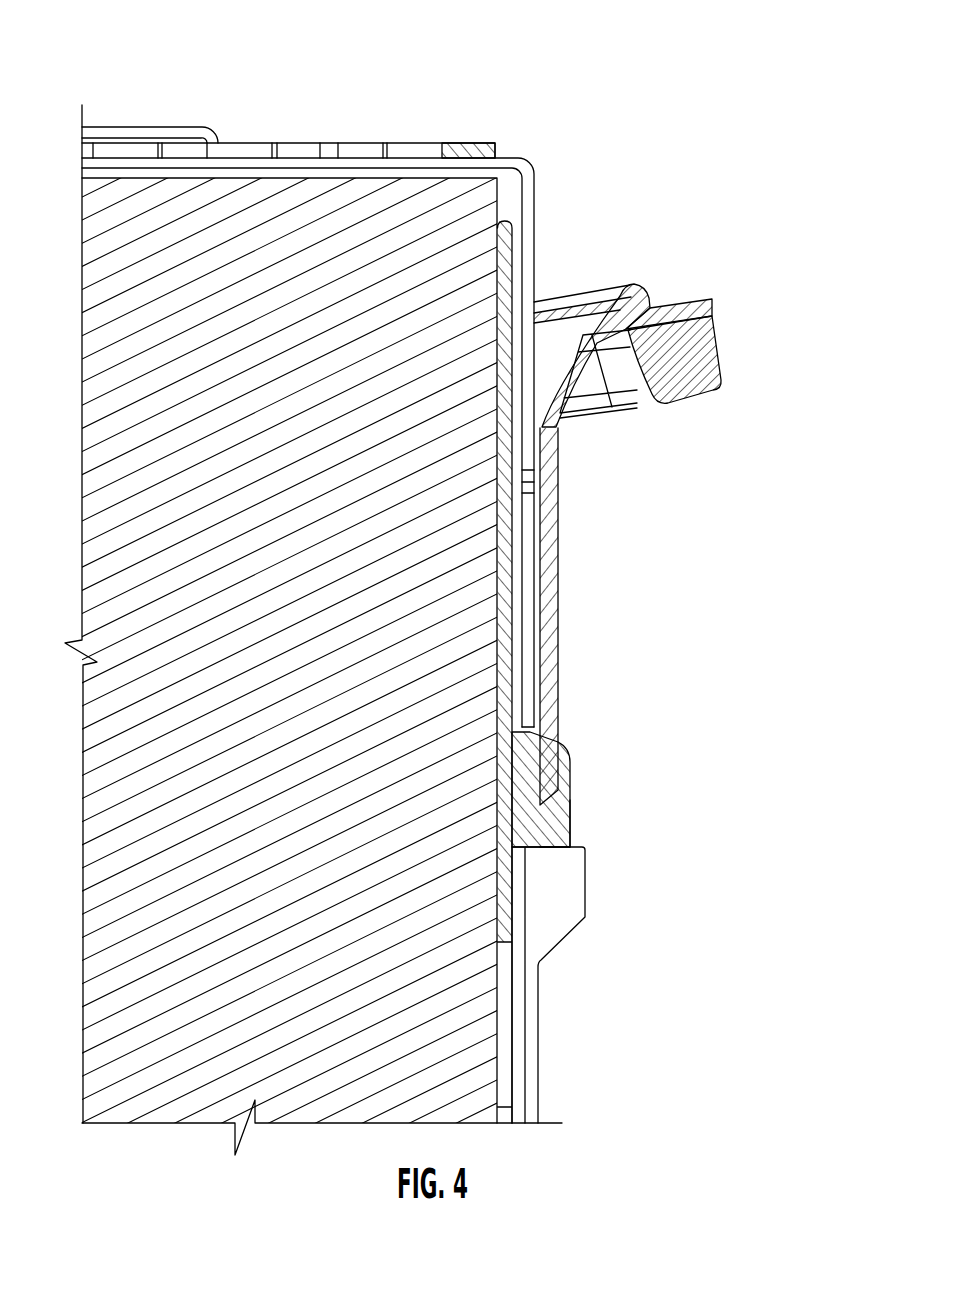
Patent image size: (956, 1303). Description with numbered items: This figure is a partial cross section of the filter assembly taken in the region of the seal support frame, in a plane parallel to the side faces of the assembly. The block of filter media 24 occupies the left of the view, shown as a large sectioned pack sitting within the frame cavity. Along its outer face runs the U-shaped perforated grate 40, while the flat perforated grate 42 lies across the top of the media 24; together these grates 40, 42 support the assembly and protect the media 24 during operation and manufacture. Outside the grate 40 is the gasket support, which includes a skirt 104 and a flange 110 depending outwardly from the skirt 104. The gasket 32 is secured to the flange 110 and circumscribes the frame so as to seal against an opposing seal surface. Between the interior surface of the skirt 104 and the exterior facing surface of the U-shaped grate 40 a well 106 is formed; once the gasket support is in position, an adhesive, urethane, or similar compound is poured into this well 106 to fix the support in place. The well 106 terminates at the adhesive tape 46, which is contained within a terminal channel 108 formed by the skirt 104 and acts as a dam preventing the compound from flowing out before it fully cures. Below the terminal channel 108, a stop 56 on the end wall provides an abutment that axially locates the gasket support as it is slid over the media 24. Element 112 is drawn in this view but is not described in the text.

The filter media 24 is at (473, 207).
The gasket 32 is at (723, 345).
The U-shaped perforated grate 40 is at (516, 276).
The flat perforated grate 42 is at (474, 141).
The adhesive tape 46 is at (558, 840).
The stop 56 is at (586, 880).
The skirt 104 is at (560, 553).
The well 106 is at (531, 400).
The terminal channel 108 is at (547, 778).
The flange 110 is at (708, 300).
The bracket plate 112 is at (643, 284).